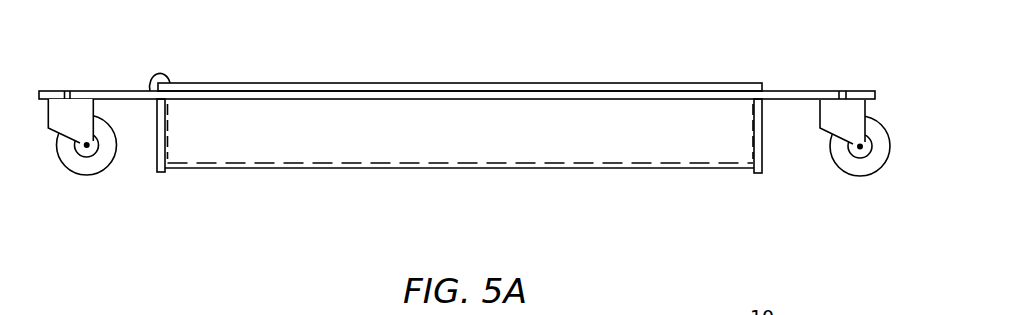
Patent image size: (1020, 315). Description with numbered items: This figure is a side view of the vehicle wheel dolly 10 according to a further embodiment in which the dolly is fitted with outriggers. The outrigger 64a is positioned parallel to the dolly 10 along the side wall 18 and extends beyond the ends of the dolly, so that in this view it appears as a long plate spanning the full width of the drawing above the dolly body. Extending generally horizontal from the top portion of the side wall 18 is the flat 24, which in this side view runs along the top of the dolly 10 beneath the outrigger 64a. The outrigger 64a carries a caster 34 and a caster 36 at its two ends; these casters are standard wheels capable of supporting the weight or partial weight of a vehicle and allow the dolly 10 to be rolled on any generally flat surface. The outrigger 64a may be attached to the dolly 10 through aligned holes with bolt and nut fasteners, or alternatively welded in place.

The vehicle wheel dolly 10 is at (657, 61).
The side wall 18 is at (383, 142).
The flat 24 is at (365, 89).
The caster 34 is at (852, 162).
The caster 36 is at (94, 165).
The outrigger 64a is at (122, 91).